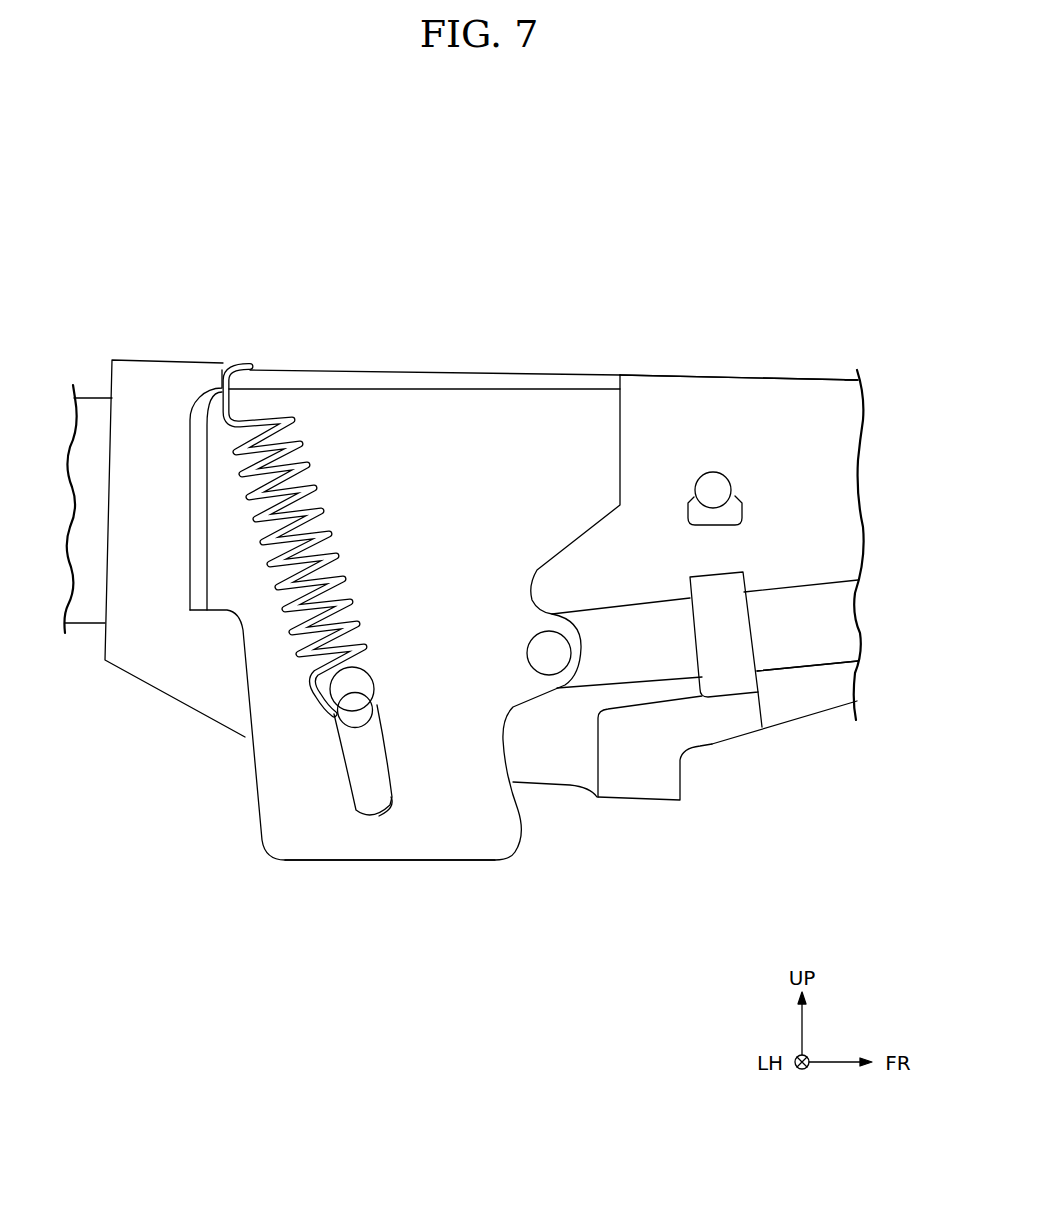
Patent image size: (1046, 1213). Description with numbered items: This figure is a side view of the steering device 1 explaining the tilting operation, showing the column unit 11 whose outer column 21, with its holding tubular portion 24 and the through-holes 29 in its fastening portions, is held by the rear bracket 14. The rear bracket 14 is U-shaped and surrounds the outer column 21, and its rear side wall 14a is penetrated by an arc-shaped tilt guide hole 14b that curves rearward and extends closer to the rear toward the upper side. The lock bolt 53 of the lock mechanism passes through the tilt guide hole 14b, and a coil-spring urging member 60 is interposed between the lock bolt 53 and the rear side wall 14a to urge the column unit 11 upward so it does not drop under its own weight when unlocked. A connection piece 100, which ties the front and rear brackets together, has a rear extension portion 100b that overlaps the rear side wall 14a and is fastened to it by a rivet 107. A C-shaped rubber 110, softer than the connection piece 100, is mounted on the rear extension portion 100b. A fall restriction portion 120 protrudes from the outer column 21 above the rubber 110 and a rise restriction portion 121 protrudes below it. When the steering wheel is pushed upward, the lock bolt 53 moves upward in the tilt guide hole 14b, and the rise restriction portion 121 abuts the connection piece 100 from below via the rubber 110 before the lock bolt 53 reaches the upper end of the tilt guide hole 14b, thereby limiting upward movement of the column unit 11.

The steering device 1 is at (778, 216).
The column unit 11 is at (753, 372).
The outer column 21 is at (859, 545).
The rear bracket 14 is at (537, 364).
The rear side wall 14a is at (463, 830).
The tilt guide hole 14b is at (375, 818).
The holding tubular portion 24 is at (820, 410).
The through-hole 29 is at (368, 697).
The lock bolt 53 is at (353, 708).
The urging member 60 is at (292, 657).
The connection piece 100 is at (791, 578).
The rear extension portion 100b is at (830, 621).
The rivet 107 is at (550, 653).
The rubber 110 is at (733, 677).
The fall restriction portion 120 is at (712, 487).
The rise restriction portion 121 is at (667, 728).